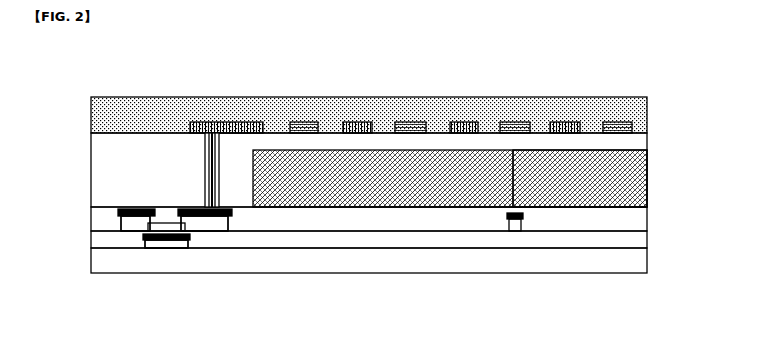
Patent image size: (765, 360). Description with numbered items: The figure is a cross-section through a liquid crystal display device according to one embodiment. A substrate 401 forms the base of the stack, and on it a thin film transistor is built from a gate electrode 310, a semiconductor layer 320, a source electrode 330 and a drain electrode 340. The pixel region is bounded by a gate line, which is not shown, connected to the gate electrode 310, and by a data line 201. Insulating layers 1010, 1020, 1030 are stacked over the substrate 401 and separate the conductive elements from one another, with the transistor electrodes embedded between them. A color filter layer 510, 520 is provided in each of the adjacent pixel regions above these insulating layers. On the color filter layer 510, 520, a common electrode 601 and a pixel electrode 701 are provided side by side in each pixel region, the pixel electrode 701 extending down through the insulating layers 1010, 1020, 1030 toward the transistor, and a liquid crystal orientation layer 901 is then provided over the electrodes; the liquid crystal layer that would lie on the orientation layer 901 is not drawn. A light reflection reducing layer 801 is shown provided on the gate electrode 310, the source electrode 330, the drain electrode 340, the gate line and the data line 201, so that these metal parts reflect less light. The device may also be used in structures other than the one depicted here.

The liquid crystal orientation layer 901 is at (648, 100).
The insulating layer 1030 is at (640, 140).
The insulating layer 1020 is at (648, 211).
The insulating layer 1010 is at (648, 234).
The substrate 401 is at (648, 257).
The pixel electrode 701 is at (280, 121).
The common electrode 601 is at (365, 120).
The light reflection reducing layer 801 is at (152, 209).
The color filter layer 510 is at (357, 207).
The color filter layer 520 is at (568, 207).
The data line 201 is at (515, 231).
The source electrode 330 is at (132, 226).
The semiconductor layer 320 is at (158, 246).
The gate electrode 310 is at (178, 243).
The drain electrode 340 is at (225, 223).